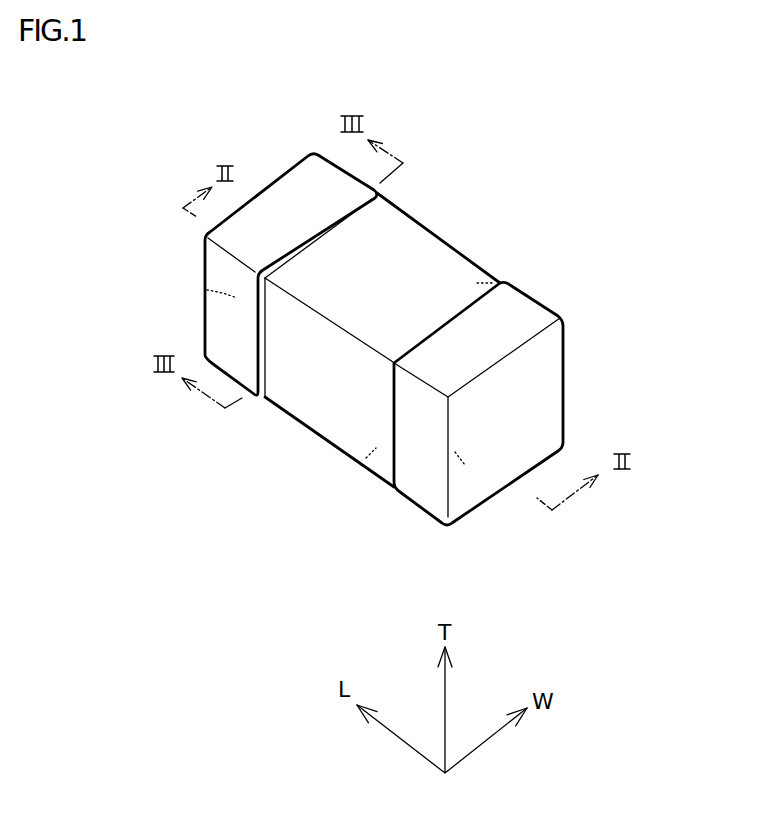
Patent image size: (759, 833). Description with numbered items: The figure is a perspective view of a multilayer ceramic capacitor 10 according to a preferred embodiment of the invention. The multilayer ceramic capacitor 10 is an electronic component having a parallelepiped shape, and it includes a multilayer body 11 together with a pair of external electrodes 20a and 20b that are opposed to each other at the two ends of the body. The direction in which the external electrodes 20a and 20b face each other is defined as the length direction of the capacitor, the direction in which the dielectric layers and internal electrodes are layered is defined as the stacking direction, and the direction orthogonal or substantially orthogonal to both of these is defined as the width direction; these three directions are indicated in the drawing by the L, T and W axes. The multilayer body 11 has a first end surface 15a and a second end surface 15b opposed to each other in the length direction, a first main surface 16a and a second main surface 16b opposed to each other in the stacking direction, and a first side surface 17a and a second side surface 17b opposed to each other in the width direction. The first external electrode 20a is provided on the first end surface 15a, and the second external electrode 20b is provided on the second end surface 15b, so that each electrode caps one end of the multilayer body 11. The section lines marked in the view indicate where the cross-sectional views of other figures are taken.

The multilayer ceramic capacitor 10 is at (370, 332).
The multilayer body 11 is at (434, 343).
The first end surface 15a is at (205, 290).
The second end surface 15b is at (462, 462).
The first main surface 16a is at (462, 275).
The second main surface 16b is at (372, 452).
The first side surface 17a is at (332, 408).
The second side surface 17b is at (502, 282).
The first external electrode 20a is at (228, 228).
The second external electrode 20b is at (528, 439).